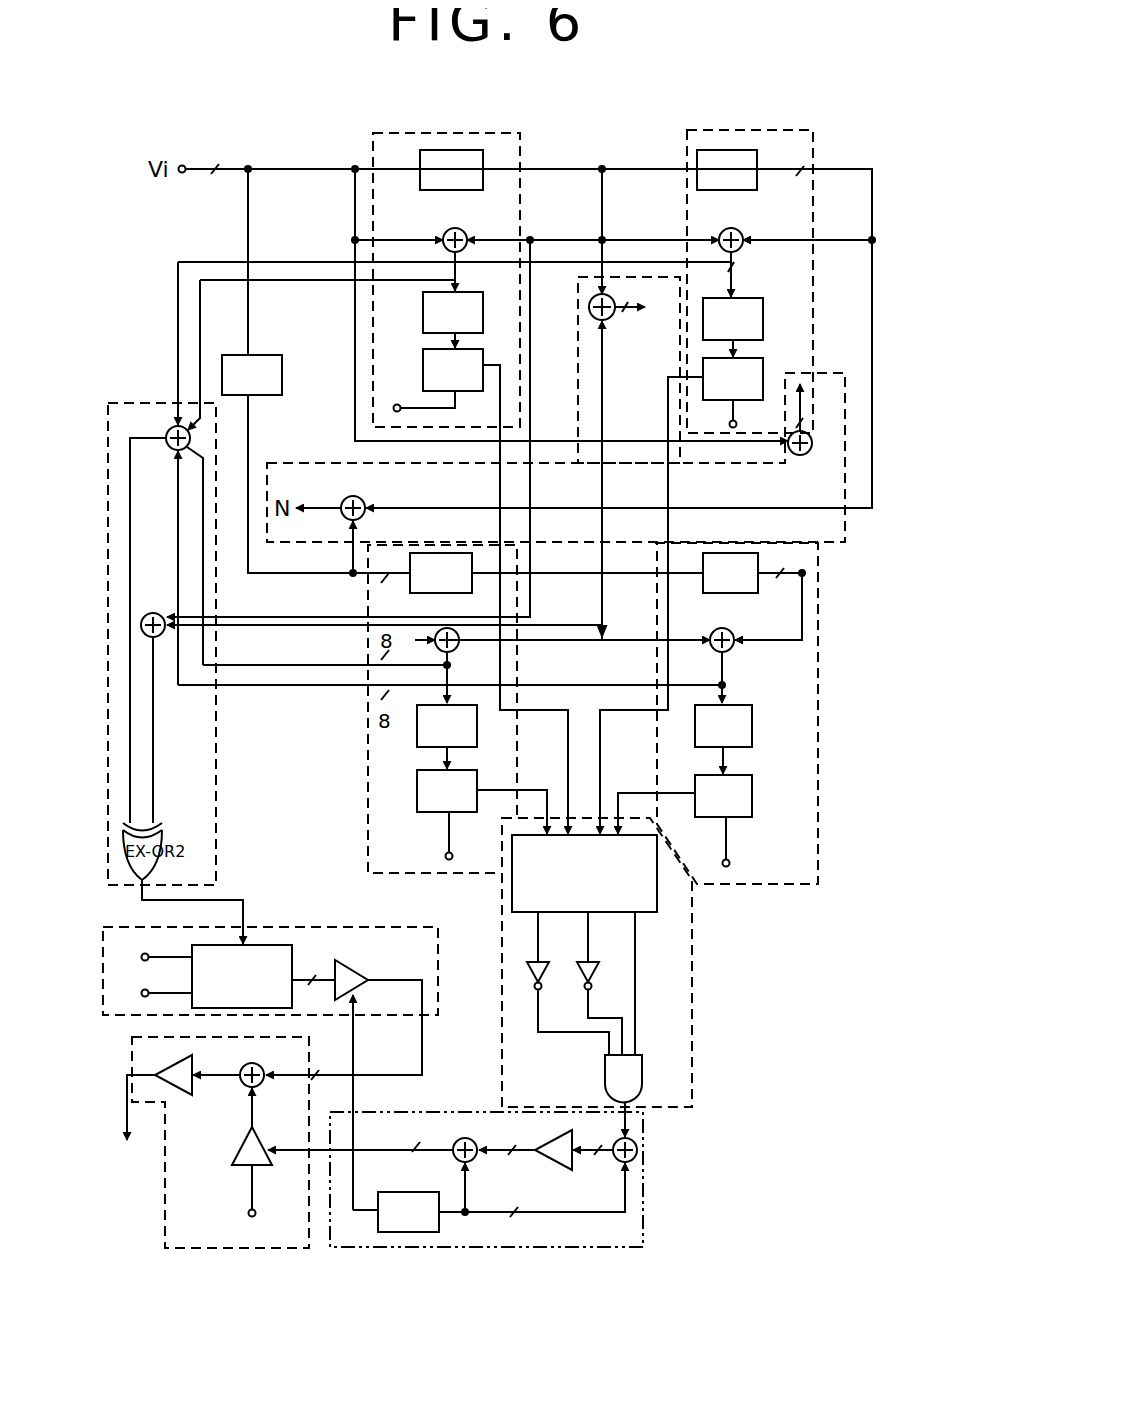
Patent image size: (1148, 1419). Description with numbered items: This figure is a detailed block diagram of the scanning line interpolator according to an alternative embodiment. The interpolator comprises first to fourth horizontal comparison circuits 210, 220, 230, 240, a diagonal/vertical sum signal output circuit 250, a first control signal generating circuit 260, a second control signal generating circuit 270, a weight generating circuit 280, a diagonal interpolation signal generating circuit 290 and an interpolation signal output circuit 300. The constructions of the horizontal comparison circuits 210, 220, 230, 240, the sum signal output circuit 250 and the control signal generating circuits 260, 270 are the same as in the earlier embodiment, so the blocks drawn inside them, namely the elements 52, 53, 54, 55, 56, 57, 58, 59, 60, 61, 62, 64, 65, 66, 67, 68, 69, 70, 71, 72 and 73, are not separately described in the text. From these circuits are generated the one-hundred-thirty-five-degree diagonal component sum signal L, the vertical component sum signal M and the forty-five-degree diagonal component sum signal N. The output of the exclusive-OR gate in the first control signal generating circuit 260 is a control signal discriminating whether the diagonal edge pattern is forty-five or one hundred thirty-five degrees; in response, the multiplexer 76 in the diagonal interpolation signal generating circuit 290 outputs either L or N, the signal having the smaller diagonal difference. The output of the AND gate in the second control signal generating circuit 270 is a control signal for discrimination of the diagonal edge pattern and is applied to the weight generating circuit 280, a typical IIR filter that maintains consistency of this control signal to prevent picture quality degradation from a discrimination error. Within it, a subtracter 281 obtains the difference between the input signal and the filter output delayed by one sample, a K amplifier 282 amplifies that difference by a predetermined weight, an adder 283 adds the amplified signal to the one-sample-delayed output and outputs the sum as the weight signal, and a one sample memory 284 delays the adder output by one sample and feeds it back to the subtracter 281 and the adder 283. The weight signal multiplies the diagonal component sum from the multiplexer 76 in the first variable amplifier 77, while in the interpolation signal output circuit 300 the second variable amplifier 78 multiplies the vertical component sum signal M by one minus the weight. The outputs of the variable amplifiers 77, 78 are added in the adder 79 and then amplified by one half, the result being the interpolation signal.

The Z delay element 52 is at (483, 160).
The Z delay element 53 is at (750, 160).
The adder 54 is at (463, 233).
The adder 55 is at (740, 232).
The Z delay element 56 is at (282, 380).
The Z delay element 57 is at (410, 590).
The Z delay element 58 is at (758, 560).
The adder 59 is at (456, 650).
The adder 60 is at (732, 636).
The adder 61 is at (170, 448).
The subtractor 62 is at (155, 614).
The adder 64 is at (363, 500).
The absolute value circuit (ABC) 65 is at (423, 312).
The absolute value circuit (ABC) 66 is at (763, 318).
The absolute value circuit (ABC) 67 is at (417, 740).
The absolute value circuit (ABC) 68 is at (752, 714).
The comparator 69 is at (423, 366).
The comparator 70 is at (758, 362).
The comparator 71 is at (417, 802).
The comparator 72 is at (752, 796).
The bit adder 73 is at (650, 915).
The multiplexer 76 is at (262, 945).
The first variable amplifier 77 is at (352, 977).
The second variable amplifier 78 is at (262, 1140).
The adder 79 is at (262, 1068).
The first horizontal comparison circuit 210 is at (466, 145).
The second horizontal comparison circuit 220 is at (738, 133).
The third horizontal comparison circuit 230 is at (368, 745).
The fourth horizontal comparison circuit 240 is at (818, 712).
The diagonal/vertical sum signal output circuit 250 is at (845, 468).
The first control signal generating circuit 260 is at (118, 400).
The second control signal generating circuit 270 is at (692, 985).
The weight generating circuit 280 is at (643, 1226).
The subtracter 281 is at (637, 1155).
The K amplifier 282 is at (552, 1168).
The adder 283 is at (455, 1142).
The one sample memory 284 is at (420, 1192).
The diagonal interpolation signal generating circuit 290 is at (332, 926).
The interpolation signal output circuit 300 is at (200, 1250).